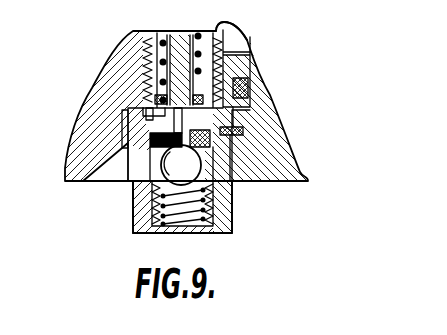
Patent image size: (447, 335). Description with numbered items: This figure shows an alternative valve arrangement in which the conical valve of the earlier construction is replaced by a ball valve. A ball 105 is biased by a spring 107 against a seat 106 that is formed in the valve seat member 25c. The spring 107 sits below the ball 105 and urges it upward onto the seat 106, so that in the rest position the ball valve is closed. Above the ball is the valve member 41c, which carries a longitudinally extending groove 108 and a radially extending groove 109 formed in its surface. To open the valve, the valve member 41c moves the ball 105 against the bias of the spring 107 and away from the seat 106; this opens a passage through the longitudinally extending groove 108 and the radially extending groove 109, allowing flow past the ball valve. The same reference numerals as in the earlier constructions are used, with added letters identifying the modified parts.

The valve member 41c is at (225, 25).
The radially extending groove 109 is at (274, 104).
The valve seat member 25c is at (135, 133).
The longitudinally extending groove 108 is at (150, 138).
The seat 106 is at (132, 183).
The spring 107 is at (133, 215).
The ball 105 is at (234, 185).